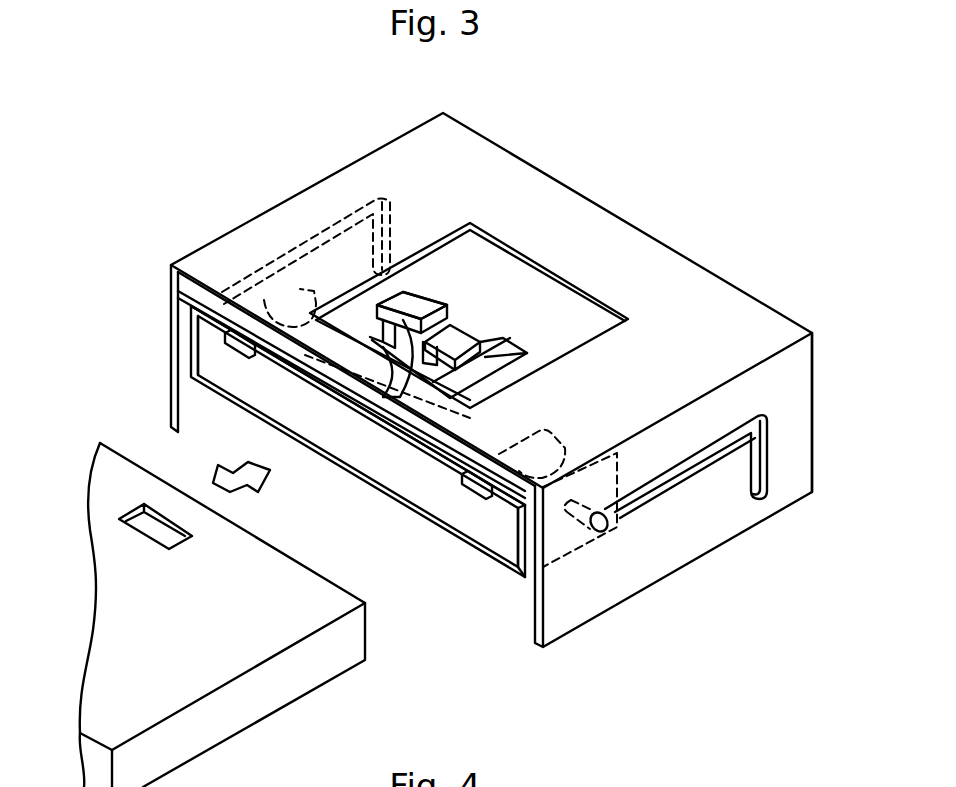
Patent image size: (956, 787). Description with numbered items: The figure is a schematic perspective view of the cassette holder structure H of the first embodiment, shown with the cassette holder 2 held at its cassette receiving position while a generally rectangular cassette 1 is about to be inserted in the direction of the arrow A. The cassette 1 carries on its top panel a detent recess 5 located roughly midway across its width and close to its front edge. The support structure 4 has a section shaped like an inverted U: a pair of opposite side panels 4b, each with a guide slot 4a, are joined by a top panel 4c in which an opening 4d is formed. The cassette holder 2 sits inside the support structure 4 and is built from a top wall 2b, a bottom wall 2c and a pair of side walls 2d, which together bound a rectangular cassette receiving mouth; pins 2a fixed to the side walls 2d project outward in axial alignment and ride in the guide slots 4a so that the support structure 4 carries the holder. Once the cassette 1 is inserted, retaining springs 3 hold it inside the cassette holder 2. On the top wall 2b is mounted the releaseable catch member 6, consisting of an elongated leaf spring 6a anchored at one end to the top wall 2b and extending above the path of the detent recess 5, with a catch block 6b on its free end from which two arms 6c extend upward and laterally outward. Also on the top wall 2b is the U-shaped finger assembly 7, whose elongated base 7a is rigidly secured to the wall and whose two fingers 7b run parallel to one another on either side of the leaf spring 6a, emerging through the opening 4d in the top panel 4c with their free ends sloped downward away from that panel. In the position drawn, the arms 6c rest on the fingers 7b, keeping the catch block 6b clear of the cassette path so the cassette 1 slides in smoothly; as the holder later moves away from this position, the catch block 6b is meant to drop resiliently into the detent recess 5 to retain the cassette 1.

The cassette 1 is at (260, 707).
The cassette holder 2 is at (405, 487).
The pins 2a is at (602, 535).
The top wall 2b is at (445, 463).
The bottom wall 2c is at (203, 345).
The side walls 2d is at (518, 533).
The retaining springs 3 is at (287, 303).
The support structure 4 is at (654, 257).
The guide slots 4a is at (338, 227).
The side panels 4b is at (171, 312).
The top panel 4c is at (735, 300).
The opening 4d is at (578, 308).
The detent recess 5 is at (170, 547).
The releaseable catch member 6 is at (467, 319).
The leaf spring 6a is at (413, 335).
The catch block 6b is at (428, 368).
The arms 6c is at (442, 298).
The finger assembly 7 is at (518, 336).
The base 7a is at (332, 371).
The fingers 7b is at (441, 295).
The arrow A is at (248, 480).
The cassette holder structure H is at (712, 249).